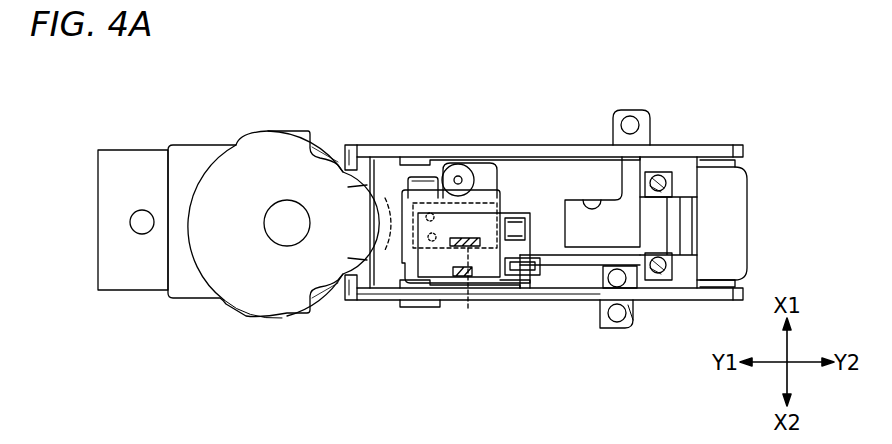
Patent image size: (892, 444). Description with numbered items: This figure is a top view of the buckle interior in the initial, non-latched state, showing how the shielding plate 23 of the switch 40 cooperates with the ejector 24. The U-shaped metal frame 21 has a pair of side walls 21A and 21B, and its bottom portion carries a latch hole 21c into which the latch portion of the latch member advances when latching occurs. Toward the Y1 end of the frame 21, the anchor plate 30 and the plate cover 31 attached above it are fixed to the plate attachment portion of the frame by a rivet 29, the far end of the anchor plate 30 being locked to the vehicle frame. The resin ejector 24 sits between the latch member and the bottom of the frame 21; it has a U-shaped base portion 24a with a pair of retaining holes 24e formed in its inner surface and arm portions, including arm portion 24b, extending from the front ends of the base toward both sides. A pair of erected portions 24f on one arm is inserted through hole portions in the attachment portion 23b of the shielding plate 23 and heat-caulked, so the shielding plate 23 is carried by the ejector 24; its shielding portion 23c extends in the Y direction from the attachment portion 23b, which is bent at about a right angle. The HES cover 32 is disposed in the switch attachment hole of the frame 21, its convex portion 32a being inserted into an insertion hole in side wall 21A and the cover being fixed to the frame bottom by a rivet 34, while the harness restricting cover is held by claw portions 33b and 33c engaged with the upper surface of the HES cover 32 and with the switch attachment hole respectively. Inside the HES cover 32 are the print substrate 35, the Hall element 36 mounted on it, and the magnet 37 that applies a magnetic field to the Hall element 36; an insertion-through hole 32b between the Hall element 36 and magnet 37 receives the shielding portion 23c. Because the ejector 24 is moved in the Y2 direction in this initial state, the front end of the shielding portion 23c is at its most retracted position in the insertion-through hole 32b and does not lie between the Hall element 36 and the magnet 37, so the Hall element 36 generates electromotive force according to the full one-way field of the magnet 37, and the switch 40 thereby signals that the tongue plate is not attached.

The frame 21 is at (733, 142).
The side wall 21A is at (357, 300).
The side wall 21B is at (352, 150).
The latch hole 21c is at (580, 200).
The shielding plate 23 is at (612, 325).
The attachment portion 23b is at (607, 327).
The shielding portion 23c is at (603, 330).
The ejector 24 is at (708, 196).
The base portion 24a is at (633, 312).
The arm portion 24b is at (647, 112).
The retaining holes 24e is at (660, 184).
The erected portions 24f is at (607, 283).
The rivet 29 is at (283, 238).
The anchor plate 30 is at (133, 157).
The plate cover 31 is at (258, 140).
The HES cover 32 is at (500, 152).
The convex portion 32a is at (428, 307).
The insertion-through hole 32b is at (510, 282).
The claw portion 33b is at (530, 212).
The claw portion 33c is at (420, 178).
The rivet 34 is at (458, 178).
The print substrate 35 is at (500, 186).
The Hall element 36 is at (478, 305).
The magnet 37 is at (465, 305).
The switch 40 is at (600, 414).